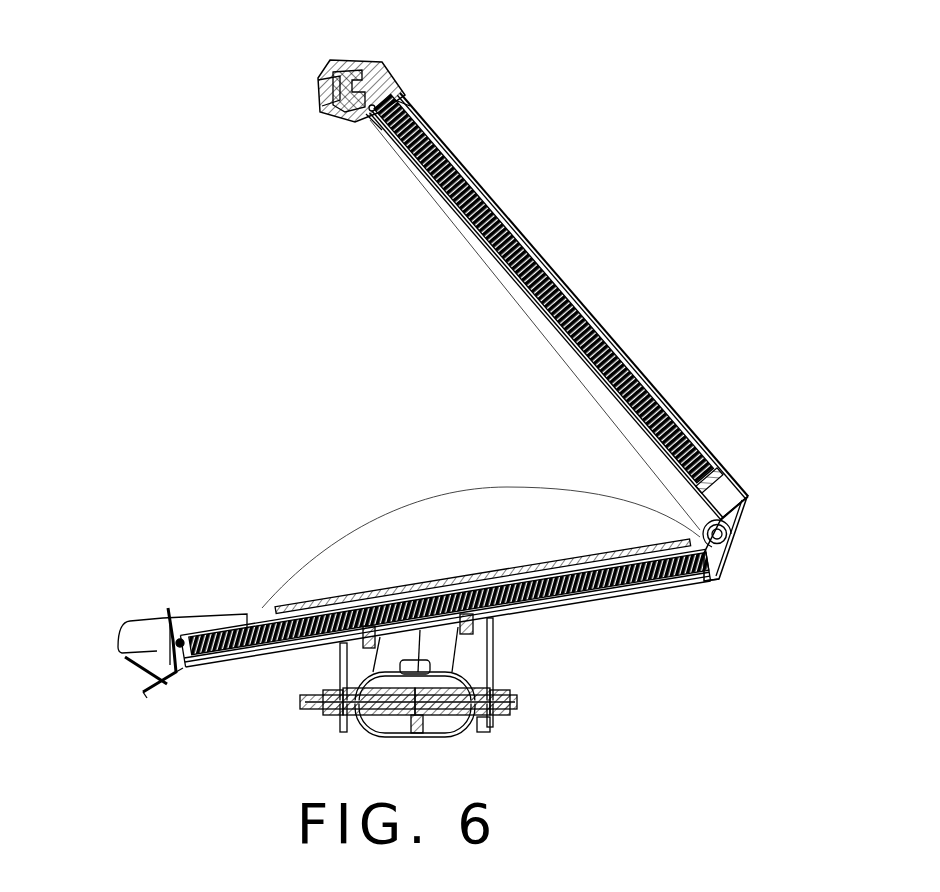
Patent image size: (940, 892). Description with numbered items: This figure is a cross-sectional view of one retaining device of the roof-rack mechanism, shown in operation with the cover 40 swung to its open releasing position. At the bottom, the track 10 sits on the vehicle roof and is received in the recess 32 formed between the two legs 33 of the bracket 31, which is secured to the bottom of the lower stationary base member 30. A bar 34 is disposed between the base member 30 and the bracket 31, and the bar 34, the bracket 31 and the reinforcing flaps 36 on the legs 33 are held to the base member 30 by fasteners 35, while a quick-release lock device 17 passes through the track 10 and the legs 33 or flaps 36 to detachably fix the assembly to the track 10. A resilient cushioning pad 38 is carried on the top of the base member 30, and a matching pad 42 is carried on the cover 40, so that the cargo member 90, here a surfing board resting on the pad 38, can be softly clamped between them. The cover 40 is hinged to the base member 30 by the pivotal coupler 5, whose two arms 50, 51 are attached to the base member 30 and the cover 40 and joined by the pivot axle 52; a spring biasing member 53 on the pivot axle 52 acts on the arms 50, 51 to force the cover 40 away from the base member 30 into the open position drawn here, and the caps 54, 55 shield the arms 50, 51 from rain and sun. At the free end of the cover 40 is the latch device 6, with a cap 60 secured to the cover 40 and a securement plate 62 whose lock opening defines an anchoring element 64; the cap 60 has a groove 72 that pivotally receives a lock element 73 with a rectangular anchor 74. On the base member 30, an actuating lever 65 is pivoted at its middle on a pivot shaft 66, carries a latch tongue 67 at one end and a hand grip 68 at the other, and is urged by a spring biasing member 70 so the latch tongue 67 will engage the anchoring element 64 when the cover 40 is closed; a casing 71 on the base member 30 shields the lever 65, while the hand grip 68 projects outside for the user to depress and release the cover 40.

The pivotal coupler 5 is at (762, 505).
The latch device 6 is at (422, 73).
The track 10 is at (376, 722).
The quick-release lock device 17 is at (512, 710).
The lower stationary base member 30 is at (607, 596).
The bracket 31 is at (494, 734).
The recess 32 is at (440, 738).
The legs 33 is at (520, 700).
The bar 34 is at (428, 604).
The fasteners 35 is at (360, 646).
The flaps 36 is at (495, 655).
The cushioning pad 38 is at (232, 636).
The cover 40 is at (553, 268).
The cushioning pad 42 is at (502, 260).
The hinge arm 50 is at (690, 582).
The hinge arm 51 is at (722, 479).
The pivot axle 52 is at (735, 548).
The spring biasing member 53 is at (700, 527).
The cap 54 is at (734, 578).
The cap 55 is at (748, 497).
The cap 60 is at (386, 64).
The securement plate 62 is at (410, 102).
The anchoring element 64 is at (370, 112).
The actuating lever 65 is at (183, 668).
The pivot shaft 66 is at (165, 646).
The latch tongue 67 is at (179, 638).
The hand grip 68 is at (148, 695).
The spring biasing member 70 is at (133, 627).
The casing 71 is at (125, 658).
The groove 72 is at (345, 68).
The lock element 73 is at (322, 105).
The anchor 74 is at (357, 120).
The cargo member 90 is at (364, 602).